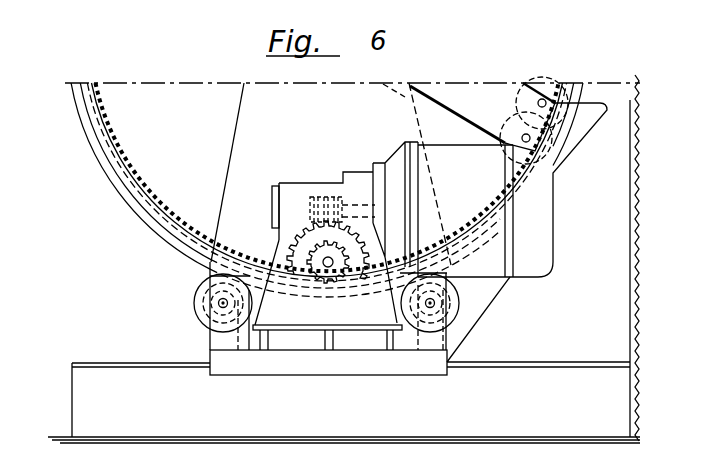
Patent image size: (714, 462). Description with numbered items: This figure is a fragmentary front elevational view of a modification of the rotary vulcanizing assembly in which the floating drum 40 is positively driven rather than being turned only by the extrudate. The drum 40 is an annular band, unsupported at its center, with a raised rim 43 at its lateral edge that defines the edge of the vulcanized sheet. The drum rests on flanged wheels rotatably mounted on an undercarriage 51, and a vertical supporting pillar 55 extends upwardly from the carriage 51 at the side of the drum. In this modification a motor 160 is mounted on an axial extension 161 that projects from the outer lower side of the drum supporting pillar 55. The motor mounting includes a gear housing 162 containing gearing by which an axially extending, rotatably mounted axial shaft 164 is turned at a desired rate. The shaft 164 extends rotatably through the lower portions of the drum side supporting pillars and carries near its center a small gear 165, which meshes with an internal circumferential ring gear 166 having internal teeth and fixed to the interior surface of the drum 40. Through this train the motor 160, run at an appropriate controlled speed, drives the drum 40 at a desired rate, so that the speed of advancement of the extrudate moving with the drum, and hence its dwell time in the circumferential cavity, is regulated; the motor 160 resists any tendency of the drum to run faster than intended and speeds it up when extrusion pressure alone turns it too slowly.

The drum 40 is at (104, 178).
The rim 43 is at (187, 241).
The undercarriage 51 is at (209, 353).
The vertical supporting pillar 55 is at (240, 110).
The motor 160 is at (538, 263).
The axial extension 161 is at (293, 329).
The gear housing 162 is at (282, 183).
The axial shaft 164 is at (331, 267).
The small gear 165 is at (290, 252).
The internal circumferential ring gear 166 is at (163, 213).